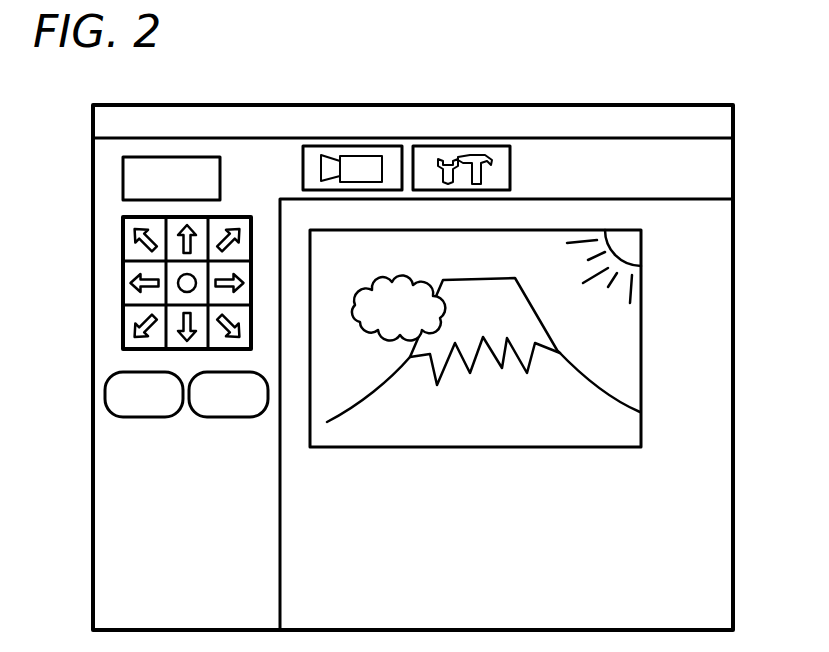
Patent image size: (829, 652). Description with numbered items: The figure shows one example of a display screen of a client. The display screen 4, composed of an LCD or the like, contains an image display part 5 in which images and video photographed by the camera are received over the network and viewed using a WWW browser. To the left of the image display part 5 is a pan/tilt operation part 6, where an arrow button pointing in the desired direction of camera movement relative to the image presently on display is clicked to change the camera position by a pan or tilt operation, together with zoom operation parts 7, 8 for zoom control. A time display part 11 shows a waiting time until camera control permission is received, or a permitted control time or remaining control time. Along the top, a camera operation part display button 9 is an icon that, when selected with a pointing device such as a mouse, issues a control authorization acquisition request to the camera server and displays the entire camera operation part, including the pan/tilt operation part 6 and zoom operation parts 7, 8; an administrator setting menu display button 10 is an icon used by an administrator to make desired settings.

The display screen 4 is at (735, 167).
The image display part 5 is at (583, 449).
The pan/tilt operation part 6 is at (122, 284).
The zoom operation part 7 is at (150, 419).
The zoom operation part 8 is at (227, 419).
The camera operation part display button 9 is at (349, 146).
The administrator setting menu display button 10 is at (454, 146).
The time display part 11 is at (122, 183).